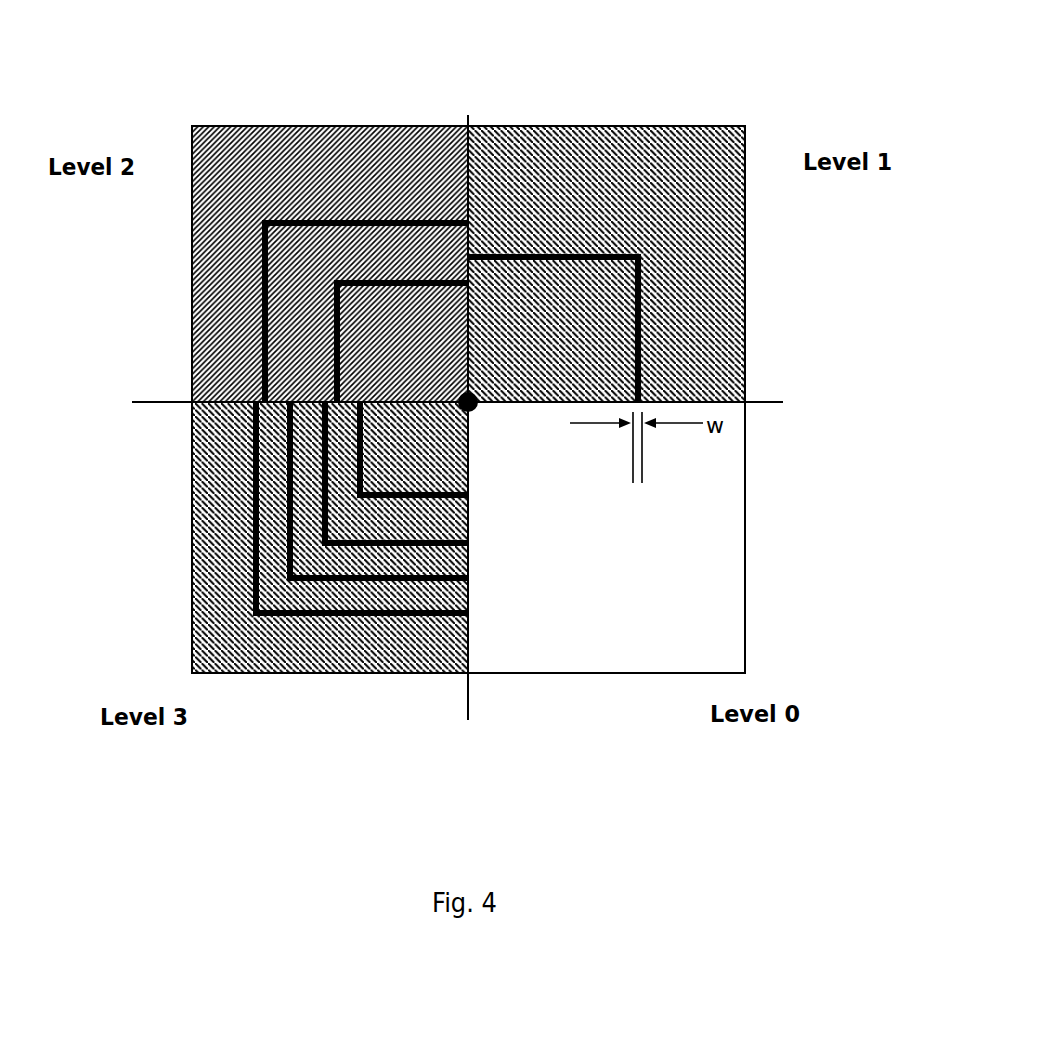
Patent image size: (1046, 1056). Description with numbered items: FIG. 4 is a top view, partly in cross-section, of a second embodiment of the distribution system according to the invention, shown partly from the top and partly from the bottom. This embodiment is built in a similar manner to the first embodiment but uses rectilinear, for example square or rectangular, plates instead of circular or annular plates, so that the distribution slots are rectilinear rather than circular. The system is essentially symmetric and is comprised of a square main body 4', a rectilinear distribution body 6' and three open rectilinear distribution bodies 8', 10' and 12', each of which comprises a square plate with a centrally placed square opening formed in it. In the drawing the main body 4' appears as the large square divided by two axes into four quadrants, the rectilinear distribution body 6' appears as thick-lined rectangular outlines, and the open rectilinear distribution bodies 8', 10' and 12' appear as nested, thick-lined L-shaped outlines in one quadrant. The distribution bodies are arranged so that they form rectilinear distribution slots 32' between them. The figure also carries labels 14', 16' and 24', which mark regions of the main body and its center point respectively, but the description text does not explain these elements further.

The square main body 4' is at (394, 350).
The hatched (etched) regions of substrate 14' is at (394, 350).
The unetched region of substrate (Level 0) 16' is at (606, 537).
The rectilinear distribution body 6' is at (487, 362).
The open rectilinear distribution body 8' is at (379, 596).
The open rectilinear distribution body 10' is at (352, 579).
The open rectilinear distribution body 12' is at (366, 502).
The center point / origin 24' is at (526, 435).
The rectilinear distribution slots 32' is at (289, 539).